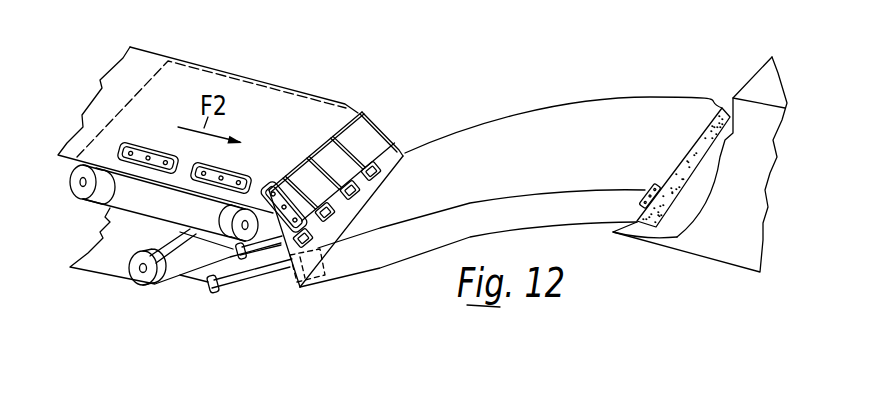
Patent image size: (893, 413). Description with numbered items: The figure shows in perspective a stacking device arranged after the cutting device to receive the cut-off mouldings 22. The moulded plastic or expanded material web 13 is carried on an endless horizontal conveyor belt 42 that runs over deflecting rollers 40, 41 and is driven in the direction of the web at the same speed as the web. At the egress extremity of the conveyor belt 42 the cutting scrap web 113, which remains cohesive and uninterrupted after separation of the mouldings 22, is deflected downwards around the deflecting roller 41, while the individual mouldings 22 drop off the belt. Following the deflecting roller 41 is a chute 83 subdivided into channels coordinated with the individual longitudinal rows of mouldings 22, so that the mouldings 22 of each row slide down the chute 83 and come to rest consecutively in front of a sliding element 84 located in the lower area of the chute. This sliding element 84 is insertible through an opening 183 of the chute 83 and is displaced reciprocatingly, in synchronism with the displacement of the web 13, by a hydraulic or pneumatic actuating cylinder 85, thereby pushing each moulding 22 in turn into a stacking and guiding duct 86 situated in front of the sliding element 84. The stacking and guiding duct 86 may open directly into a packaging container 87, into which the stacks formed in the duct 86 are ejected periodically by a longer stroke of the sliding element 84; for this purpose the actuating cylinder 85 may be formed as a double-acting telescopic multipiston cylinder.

The plastic or expanded material web 13 is at (152, 57).
The mouldings 22 is at (143, 150).
The deflecting roller 40 is at (83, 193).
The deflecting roller 41 is at (233, 227).
The conveyor belt 42 is at (147, 185).
The chute 83 is at (368, 169).
The sliding element 84 is at (322, 277).
The actuating cylinder 85 is at (248, 282).
The stacking and guiding duct 86 is at (523, 127).
The packaging container 87 is at (757, 84).
The cutting scrap web 113 is at (110, 273).
The opening 183 is at (362, 158).